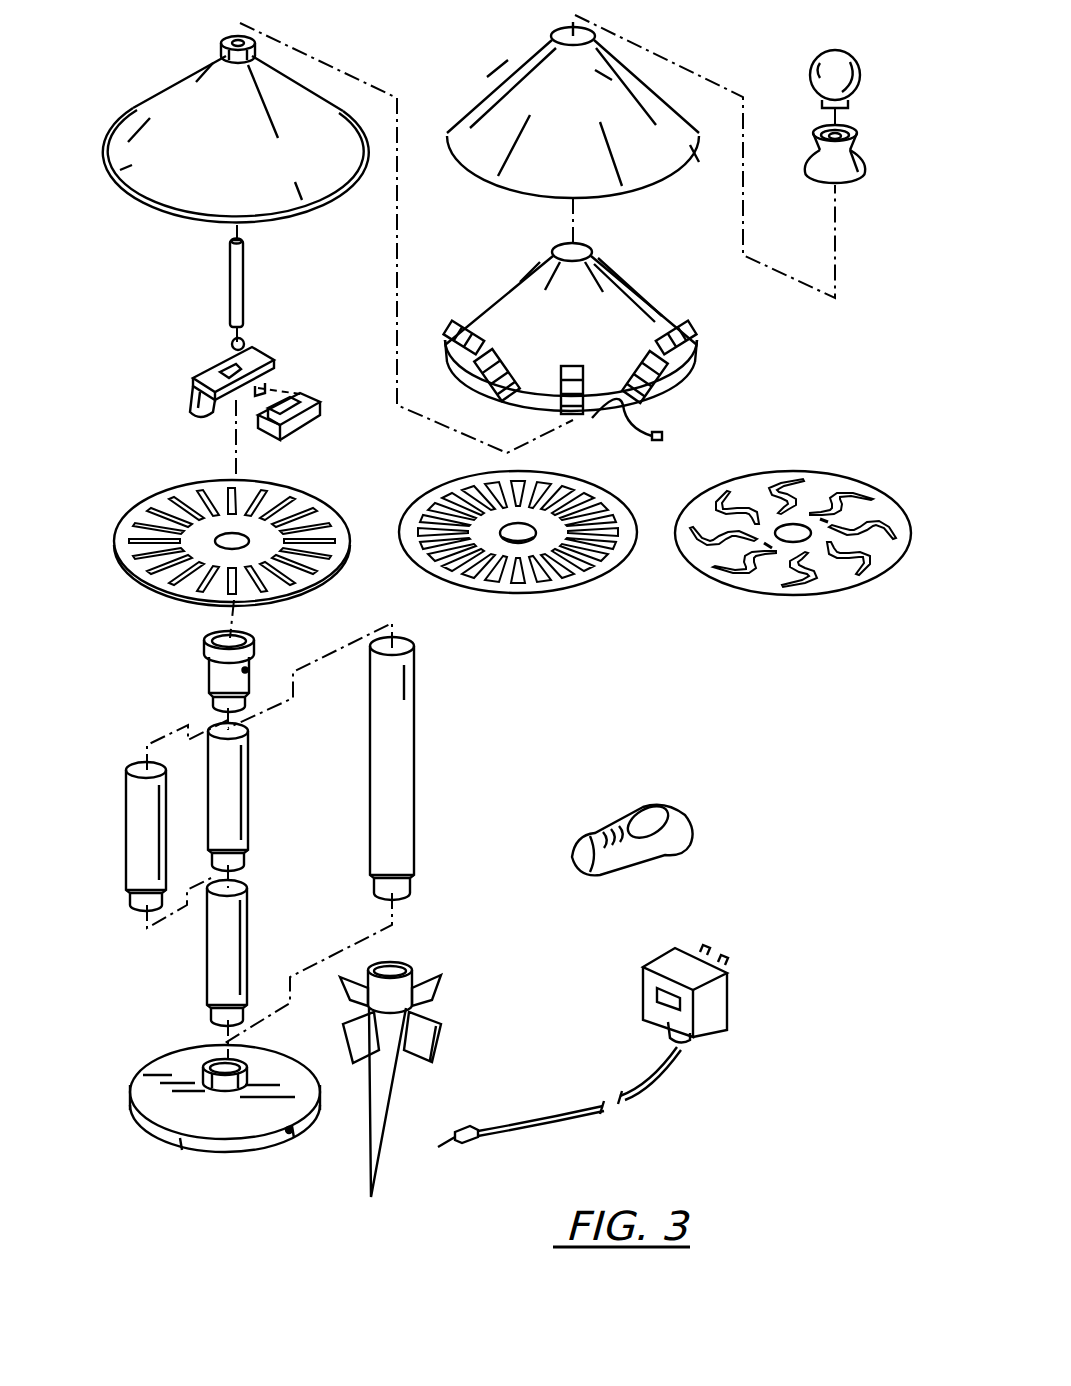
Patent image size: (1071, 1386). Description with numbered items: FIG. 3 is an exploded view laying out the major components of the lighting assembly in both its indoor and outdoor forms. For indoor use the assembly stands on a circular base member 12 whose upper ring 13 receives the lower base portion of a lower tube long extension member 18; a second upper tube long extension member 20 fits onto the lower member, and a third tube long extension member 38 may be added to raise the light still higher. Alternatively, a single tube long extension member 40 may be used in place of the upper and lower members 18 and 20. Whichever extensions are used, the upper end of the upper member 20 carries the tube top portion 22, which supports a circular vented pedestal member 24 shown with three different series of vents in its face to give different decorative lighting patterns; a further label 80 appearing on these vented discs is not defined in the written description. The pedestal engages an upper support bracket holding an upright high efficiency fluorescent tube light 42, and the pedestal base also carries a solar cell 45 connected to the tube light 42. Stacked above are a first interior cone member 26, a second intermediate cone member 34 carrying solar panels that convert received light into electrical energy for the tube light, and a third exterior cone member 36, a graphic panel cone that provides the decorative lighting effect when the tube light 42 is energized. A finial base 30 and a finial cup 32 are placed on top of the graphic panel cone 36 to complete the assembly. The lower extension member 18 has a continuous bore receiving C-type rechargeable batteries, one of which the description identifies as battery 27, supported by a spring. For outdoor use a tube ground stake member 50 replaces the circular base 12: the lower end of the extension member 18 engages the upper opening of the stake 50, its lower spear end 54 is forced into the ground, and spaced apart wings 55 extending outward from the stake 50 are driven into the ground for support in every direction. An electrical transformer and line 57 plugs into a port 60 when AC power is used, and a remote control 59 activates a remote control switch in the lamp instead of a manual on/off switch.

The circular base member 12 is at (155, 1098).
The upper ring 13 is at (223, 1085).
The lower tube long extension member 18 is at (220, 938).
The second upper tube long extension member 20 is at (237, 768).
The tube top portion 22 is at (222, 670).
The circular vented pedestal member 24 is at (130, 555).
The first interior cone member 26 is at (160, 165).
The rechargeable battery 27 is at (620, 508).
The finial base 30 is at (867, 167).
The finial cup 32 is at (818, 55).
The second intermediate cone member 34 is at (518, 295).
The third exterior cone member 36 is at (506, 82).
The third tube long extension member 38 is at (135, 806).
The single tube long extension member 40 is at (395, 737).
The high efficiency fluorescent tube light 42 is at (232, 278).
The solar cell 45 is at (205, 388).
The tube ground stake member 50 is at (413, 1094).
The lower spear end 54 is at (373, 1158).
The spaced apart wings 55 is at (432, 992).
The electrical transformer and line 57 is at (745, 991).
The remote control 59 is at (695, 810).
The port 60 is at (283, 1140).
The apertures 80 is at (178, 495).